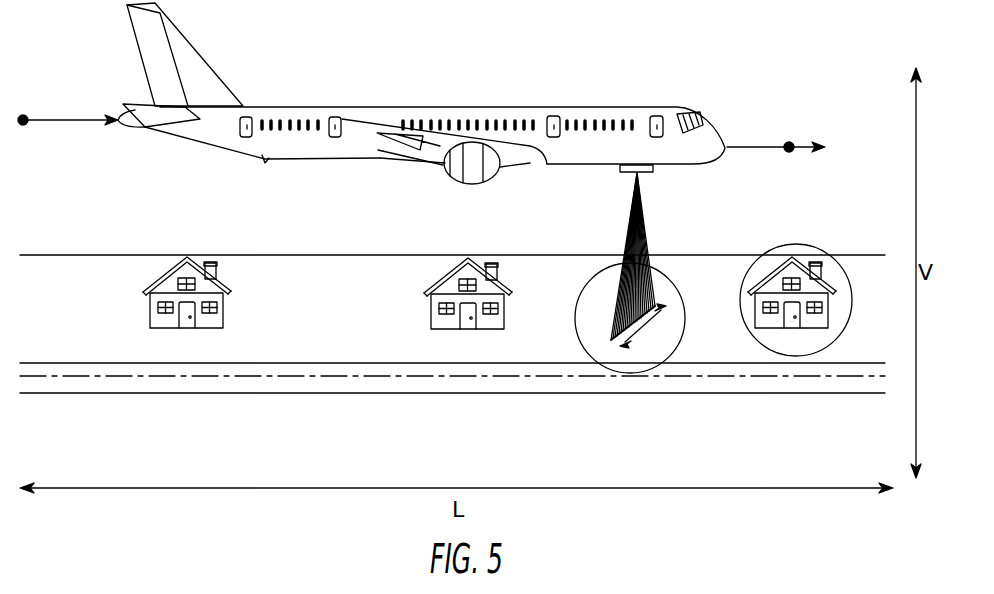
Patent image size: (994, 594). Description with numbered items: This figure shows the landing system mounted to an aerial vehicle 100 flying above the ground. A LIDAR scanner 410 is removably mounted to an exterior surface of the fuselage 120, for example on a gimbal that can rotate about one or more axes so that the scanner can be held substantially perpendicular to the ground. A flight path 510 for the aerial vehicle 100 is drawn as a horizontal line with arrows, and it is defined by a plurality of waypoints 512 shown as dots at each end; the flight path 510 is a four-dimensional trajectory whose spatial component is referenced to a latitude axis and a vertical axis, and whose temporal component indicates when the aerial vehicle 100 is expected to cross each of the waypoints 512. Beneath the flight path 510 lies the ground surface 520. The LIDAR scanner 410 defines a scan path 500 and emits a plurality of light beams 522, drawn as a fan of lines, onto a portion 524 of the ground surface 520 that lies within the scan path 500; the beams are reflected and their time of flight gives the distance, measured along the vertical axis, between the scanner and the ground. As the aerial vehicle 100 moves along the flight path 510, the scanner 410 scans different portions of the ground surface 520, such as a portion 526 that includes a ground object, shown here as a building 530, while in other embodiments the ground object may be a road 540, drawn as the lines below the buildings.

The aerial vehicle 100 is at (421, 101).
The fuselage 120 is at (610, 107).
The LIDAR scanner 410 is at (647, 172).
The scan path 500 is at (663, 309).
The flight path 510 is at (58, 118).
The waypoints 512 is at (24, 126).
The ground surface 520 is at (198, 249).
The light beams 522 is at (630, 223).
The portion of the ground surface 524 is at (685, 332).
The portion of the ground surface including a ground object 526 is at (847, 325).
The building 530 is at (223, 307).
The road 540 is at (418, 400).